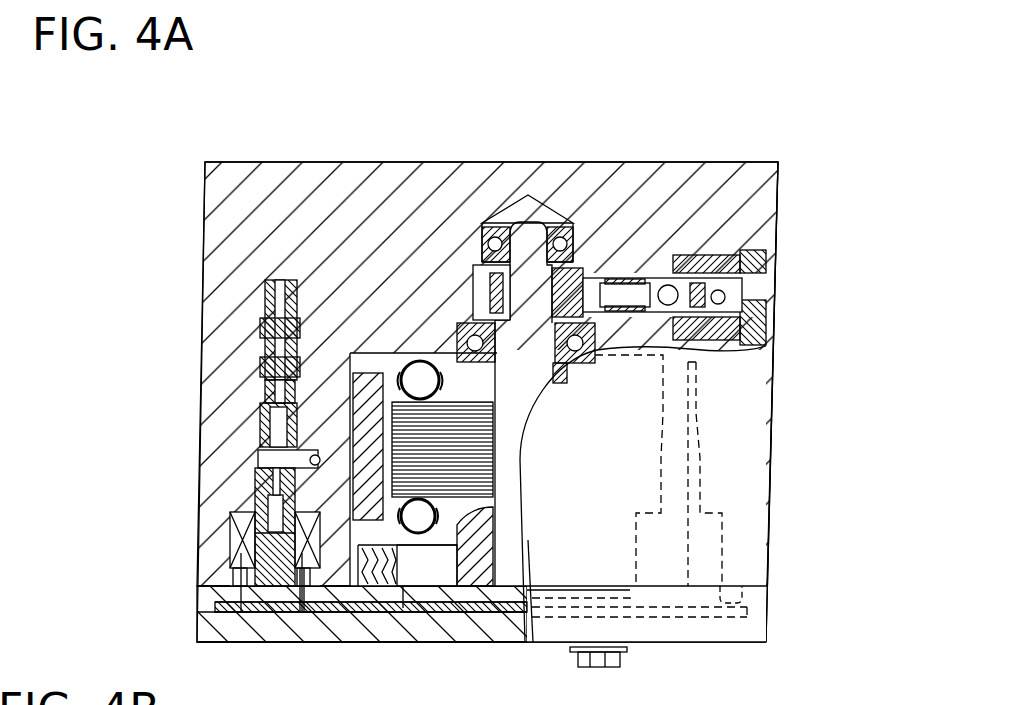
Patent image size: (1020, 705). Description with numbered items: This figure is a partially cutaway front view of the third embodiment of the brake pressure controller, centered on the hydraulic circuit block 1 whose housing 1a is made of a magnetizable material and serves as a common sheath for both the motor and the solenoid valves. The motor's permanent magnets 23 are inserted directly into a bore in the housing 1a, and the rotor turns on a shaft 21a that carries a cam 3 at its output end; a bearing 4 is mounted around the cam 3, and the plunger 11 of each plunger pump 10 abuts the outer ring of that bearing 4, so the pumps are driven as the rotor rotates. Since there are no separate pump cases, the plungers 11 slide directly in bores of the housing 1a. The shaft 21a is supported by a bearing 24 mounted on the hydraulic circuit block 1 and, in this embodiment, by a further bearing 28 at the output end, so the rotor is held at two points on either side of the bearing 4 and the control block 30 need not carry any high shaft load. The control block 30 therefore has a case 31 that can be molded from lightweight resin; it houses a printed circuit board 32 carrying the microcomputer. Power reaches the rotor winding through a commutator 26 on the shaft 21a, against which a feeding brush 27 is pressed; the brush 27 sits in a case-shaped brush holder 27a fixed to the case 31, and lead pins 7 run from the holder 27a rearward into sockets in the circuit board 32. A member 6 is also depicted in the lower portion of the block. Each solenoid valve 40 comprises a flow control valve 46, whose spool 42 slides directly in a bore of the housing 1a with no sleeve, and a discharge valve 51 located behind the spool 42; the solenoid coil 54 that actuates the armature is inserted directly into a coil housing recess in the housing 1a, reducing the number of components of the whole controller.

The hydraulic circuit block 1 is at (785, 188).
The housing 1a is at (757, 227).
The cam 3 is at (540, 275).
The bearing 4 is at (578, 320).
The terminal block 6 is at (404, 590).
The lead pin 7 is at (306, 607).
The plunger pump 10 is at (628, 268).
The plunger 11 is at (657, 252).
The shaft 21a is at (513, 520).
The permanent magnet 23 is at (372, 350).
The bearing 24 is at (457, 323).
The commutator 26 is at (518, 640).
The feeding brush 27 is at (441, 567).
The brush holder 27a is at (378, 607).
The bearing 28 is at (487, 200).
The control block 30 is at (770, 606).
The case 31 is at (752, 632).
The printed circuit board 32 is at (272, 607).
The solenoid valve 40 is at (232, 535).
The spool 42 is at (295, 278).
The flow control valve 46 is at (268, 280).
The discharge valve 51 is at (257, 487).
The solenoid coil 54 is at (240, 558).